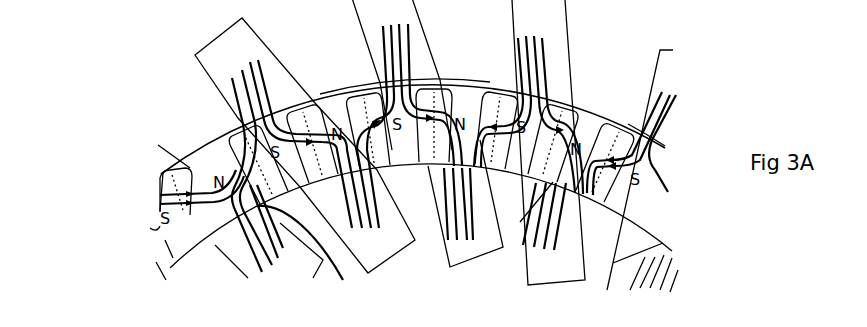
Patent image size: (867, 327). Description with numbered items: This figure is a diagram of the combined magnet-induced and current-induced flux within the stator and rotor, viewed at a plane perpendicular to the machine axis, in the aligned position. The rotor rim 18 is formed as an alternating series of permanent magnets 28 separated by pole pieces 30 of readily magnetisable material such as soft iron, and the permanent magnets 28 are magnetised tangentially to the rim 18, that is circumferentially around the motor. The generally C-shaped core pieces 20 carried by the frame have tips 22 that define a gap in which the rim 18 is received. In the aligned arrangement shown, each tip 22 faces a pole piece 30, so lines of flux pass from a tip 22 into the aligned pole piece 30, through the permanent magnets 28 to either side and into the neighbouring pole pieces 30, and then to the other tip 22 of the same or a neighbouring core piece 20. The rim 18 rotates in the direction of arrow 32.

The rim 18 is at (150, 231).
The core piece 20 is at (228, 47).
The tip 22 is at (247, 124).
The permanent magnet 28 is at (443, 82).
The pole piece 30 is at (380, 84).
The direction of rotation 32 is at (621, 93).